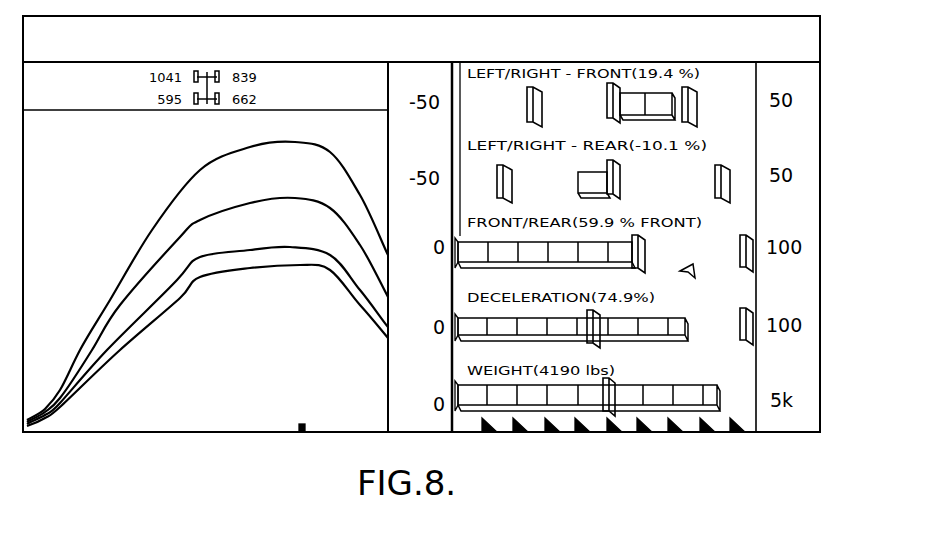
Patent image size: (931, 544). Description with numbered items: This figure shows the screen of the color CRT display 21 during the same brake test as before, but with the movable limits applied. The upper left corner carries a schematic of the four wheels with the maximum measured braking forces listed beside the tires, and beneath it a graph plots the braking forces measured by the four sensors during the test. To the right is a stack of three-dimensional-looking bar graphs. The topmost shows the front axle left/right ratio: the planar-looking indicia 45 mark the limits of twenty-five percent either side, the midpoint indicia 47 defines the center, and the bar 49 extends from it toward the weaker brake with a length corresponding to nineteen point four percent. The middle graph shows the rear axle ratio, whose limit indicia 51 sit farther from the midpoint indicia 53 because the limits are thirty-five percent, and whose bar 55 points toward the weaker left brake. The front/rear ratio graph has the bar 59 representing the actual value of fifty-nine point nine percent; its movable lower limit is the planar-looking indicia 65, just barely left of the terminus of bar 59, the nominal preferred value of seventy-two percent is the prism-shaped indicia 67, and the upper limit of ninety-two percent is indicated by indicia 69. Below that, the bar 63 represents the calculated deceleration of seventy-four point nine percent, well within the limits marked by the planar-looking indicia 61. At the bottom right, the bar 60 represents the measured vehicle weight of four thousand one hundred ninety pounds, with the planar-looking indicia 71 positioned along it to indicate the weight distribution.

The color CRT display 21 is at (820, 140).
The planar-looking indicia 45 is at (544, 101).
The midpoint indicia 47 is at (607, 116).
The bar 49 is at (662, 94).
The limit indicia 51 is at (514, 171).
The midpoint indicia 53 is at (622, 172).
The bar 55 is at (582, 174).
The bar 59 is at (623, 241).
The bar 60 is at (718, 391).
The planar-looking indicia 61 is at (598, 341).
The bar 63 is at (685, 338).
The planar-looking indicia 65 is at (641, 265).
The prism-shaped indicia 67 is at (695, 271).
The indicia 69 is at (740, 250).
The planar-looking indicia 71 is at (616, 384).